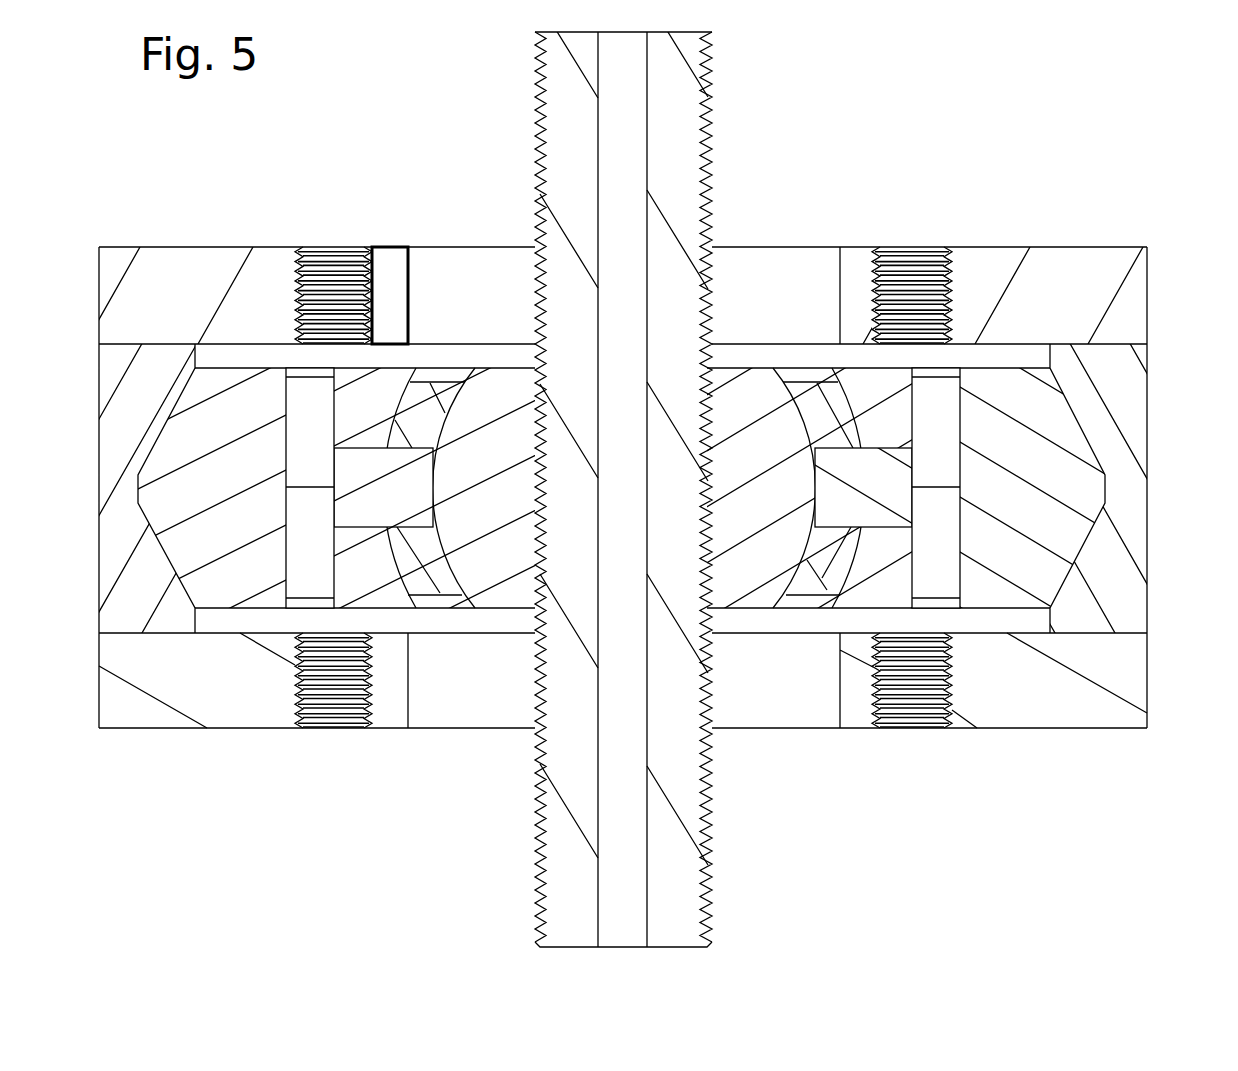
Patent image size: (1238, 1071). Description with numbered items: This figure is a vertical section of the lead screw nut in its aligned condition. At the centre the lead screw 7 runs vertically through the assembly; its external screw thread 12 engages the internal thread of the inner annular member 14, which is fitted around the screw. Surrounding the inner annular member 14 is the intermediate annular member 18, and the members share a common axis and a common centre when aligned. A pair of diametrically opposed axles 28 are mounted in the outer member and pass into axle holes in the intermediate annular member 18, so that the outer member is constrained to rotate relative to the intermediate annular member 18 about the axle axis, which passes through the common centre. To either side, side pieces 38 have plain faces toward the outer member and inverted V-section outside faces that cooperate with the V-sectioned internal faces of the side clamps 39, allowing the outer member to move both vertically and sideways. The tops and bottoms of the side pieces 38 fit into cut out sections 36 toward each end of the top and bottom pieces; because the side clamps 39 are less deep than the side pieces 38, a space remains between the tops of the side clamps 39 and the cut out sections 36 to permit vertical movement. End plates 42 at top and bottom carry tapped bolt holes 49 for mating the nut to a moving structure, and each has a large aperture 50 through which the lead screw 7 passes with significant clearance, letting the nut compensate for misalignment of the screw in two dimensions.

The lead screw 7 is at (675, 155).
The external screw thread 12 is at (700, 208).
The inner annular member 14 is at (737, 568).
The intermediate annular member 18 is at (812, 585).
The axles 28 is at (900, 473).
The cut out sections 36 is at (915, 575).
The side pieces 38 is at (1080, 500).
The side clamps 39 is at (1123, 410).
The end plates 42 is at (1053, 277).
The tapped bolt holes 49 is at (919, 272).
The large aperture 50 is at (813, 275).